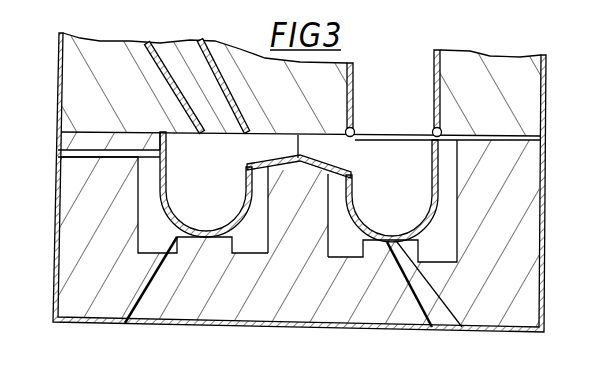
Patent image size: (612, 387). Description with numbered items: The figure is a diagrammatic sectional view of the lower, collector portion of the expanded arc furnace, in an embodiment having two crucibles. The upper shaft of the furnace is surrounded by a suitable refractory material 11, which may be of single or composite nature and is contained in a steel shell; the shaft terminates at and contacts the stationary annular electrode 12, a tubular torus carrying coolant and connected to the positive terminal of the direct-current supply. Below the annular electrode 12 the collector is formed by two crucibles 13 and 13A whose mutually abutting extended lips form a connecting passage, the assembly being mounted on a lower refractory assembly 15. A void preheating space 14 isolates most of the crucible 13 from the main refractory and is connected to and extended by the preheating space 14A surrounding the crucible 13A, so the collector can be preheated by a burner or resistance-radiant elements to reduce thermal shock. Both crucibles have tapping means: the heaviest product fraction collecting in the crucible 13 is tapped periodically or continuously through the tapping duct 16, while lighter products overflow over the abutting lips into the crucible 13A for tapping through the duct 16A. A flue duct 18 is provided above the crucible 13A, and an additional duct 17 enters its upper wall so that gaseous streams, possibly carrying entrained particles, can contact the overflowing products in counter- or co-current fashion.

The refractory material 11 is at (500, 80).
The stationary annular electrode 12 is at (442, 130).
The crucible 13 is at (436, 197).
The crucible 13A is at (160, 194).
The preheating space 14 is at (445, 241).
The preheating space 14A is at (97, 317).
The lower refractory assembly 15 is at (290, 312).
The tapping duct 16 is at (430, 316).
The tapping duct 16A is at (152, 316).
The duct 17 is at (57, 152).
The flue duct 18 is at (182, 52).